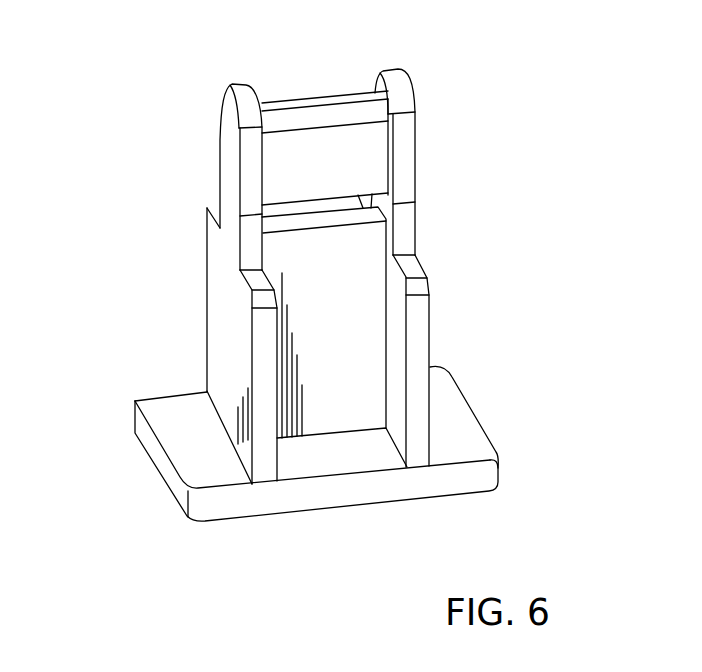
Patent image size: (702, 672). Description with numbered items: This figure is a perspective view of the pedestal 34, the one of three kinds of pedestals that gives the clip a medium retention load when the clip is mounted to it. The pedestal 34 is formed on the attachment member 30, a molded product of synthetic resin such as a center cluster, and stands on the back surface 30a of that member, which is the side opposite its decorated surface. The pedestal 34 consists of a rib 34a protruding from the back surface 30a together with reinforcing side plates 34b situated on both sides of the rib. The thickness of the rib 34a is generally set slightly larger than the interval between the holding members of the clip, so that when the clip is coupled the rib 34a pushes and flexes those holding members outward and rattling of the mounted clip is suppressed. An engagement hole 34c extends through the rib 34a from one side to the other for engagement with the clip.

The attachment member 30 is at (458, 483).
The back surface 30a is at (170, 402).
The pedestal 34 is at (330, 263).
The rib 34a is at (360, 325).
The reinforcing side plates 34b is at (218, 270).
The engagement hole 34c is at (312, 202).